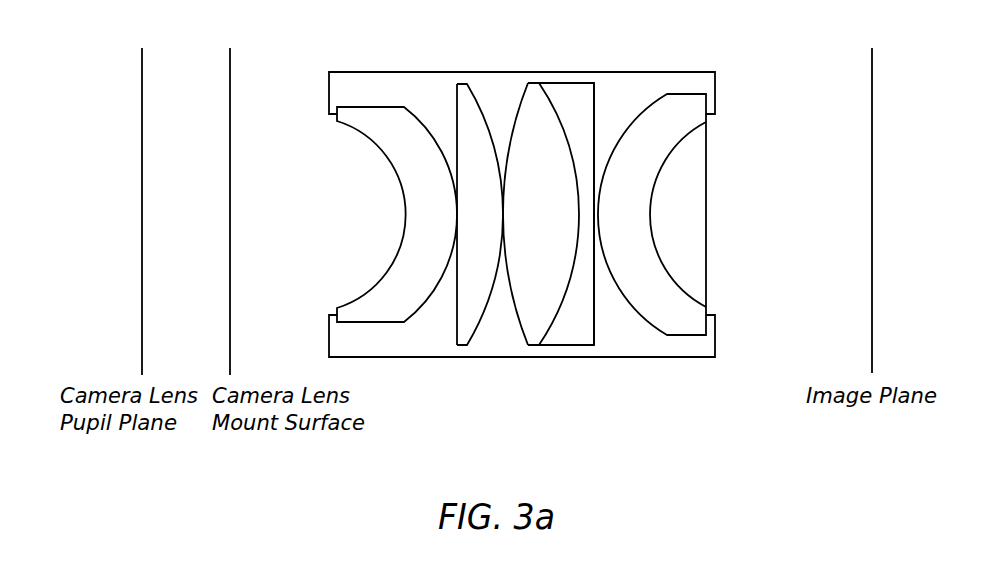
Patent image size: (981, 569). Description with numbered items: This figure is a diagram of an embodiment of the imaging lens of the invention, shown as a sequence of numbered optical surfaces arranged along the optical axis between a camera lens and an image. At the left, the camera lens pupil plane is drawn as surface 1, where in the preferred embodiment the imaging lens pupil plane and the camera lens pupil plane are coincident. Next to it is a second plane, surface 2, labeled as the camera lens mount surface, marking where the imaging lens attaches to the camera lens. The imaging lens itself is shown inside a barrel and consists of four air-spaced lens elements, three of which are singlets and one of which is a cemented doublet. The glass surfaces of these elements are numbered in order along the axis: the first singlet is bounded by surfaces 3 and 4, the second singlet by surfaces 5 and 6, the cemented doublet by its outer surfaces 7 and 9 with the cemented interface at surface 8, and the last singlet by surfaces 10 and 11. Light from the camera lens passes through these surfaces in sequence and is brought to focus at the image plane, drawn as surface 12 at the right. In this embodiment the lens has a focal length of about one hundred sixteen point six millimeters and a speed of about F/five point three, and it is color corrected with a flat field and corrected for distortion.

The surface number 1 (coincident imaging lens pupil plane and camera lens pupil plan 1 is at (150, 227).
The camera lens mount surface 2 is at (240, 227).
The first lens element (meniscus) 3 is at (377, 227).
The plano surface of second lens element 4 is at (437, 227).
The second lens element 5 is at (461, 227).
The front surface of doublet 6 is at (484, 227).
The first element of cemented doublet 7 is at (510, 227).
The cemented surface of doublet 8 is at (555, 227).
The second element of cemented doublet 9 is at (579, 227).
The last lens element 10 is at (598, 227).
The rear concave surface of last lens element 11 is at (626, 227).
The image plane surface 12 is at (842, 227).